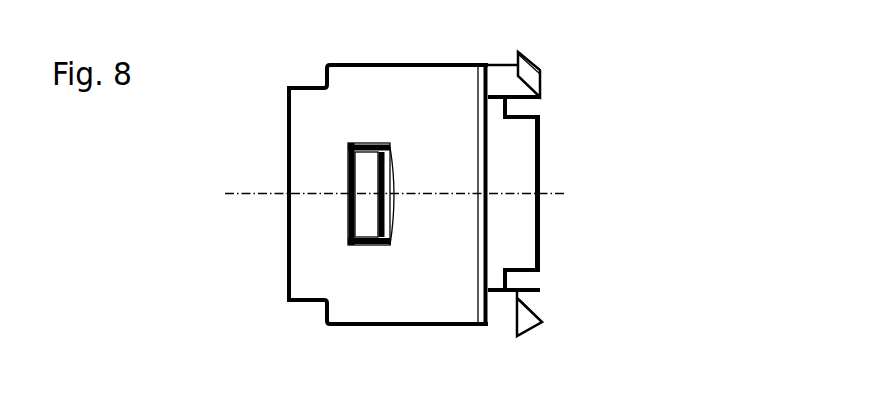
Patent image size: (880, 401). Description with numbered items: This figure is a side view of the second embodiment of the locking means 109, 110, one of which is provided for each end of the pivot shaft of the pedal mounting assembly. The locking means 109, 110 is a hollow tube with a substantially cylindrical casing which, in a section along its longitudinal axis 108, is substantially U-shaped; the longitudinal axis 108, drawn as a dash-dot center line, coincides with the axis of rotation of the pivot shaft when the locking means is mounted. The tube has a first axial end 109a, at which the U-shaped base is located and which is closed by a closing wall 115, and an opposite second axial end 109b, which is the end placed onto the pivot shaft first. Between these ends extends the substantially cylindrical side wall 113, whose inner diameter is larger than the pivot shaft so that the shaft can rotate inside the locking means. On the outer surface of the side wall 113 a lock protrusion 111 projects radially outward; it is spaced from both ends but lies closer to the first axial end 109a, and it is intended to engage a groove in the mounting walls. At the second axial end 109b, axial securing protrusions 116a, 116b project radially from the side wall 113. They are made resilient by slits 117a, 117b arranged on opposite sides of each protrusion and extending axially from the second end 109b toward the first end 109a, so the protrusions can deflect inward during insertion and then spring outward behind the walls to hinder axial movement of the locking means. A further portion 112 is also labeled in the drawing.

The longitudinal axis 108 is at (418, 195).
The locking means 109 is at (198, 228).
The locking means 110 is at (252, 194).
The first axial end 109a is at (289, 258).
The second axial end 109b is at (545, 223).
The lock protrusion 111 is at (365, 190).
The bottom portion 112 is at (276, 362).
The side wall 113 is at (408, 327).
The closing wall 115 is at (285, 170).
The axial securing protrusion 116a is at (544, 69).
The axial securing protrusion 116b is at (545, 322).
The slit 117a is at (545, 113).
The slit 117b is at (610, 173).